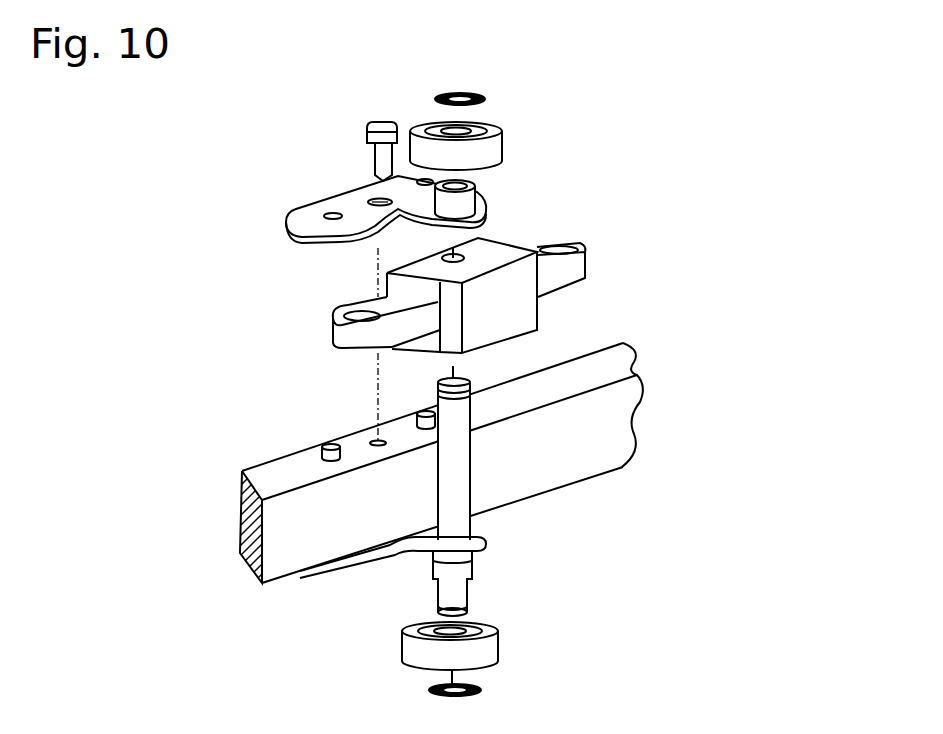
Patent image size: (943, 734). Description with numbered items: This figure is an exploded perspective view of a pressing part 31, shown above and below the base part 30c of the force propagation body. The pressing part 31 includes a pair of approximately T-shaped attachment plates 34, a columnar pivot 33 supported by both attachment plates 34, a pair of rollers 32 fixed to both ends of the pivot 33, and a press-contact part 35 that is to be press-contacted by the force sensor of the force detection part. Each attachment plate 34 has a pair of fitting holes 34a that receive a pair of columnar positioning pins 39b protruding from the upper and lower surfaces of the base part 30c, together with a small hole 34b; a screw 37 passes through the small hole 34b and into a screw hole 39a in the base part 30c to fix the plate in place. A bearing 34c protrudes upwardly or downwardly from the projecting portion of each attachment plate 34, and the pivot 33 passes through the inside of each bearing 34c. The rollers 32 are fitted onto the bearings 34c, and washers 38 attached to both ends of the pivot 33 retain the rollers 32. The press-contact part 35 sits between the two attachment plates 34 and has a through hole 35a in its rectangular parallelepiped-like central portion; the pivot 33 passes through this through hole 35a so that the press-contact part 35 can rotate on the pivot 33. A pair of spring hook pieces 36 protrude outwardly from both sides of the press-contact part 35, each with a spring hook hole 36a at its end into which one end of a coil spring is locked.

The pressing part 31 is at (258, 319).
The base part 30c is at (297, 546).
The roller 32 is at (494, 152).
The pivot 33 is at (458, 466).
The attachment plate 34 is at (342, 204).
The fitting hole 34a is at (330, 216).
The small hole 34b is at (372, 201).
The bearing 34c is at (467, 205).
The press-contact part 35 is at (520, 312).
The through hole 35a is at (447, 257).
The spring hook piece 36 is at (356, 340).
The spring hook hole 36a is at (360, 314).
The screw 37 is at (368, 133).
The washer 38 is at (486, 99).
The screw hole 39a is at (374, 441).
The positioning pin 39b is at (330, 446).